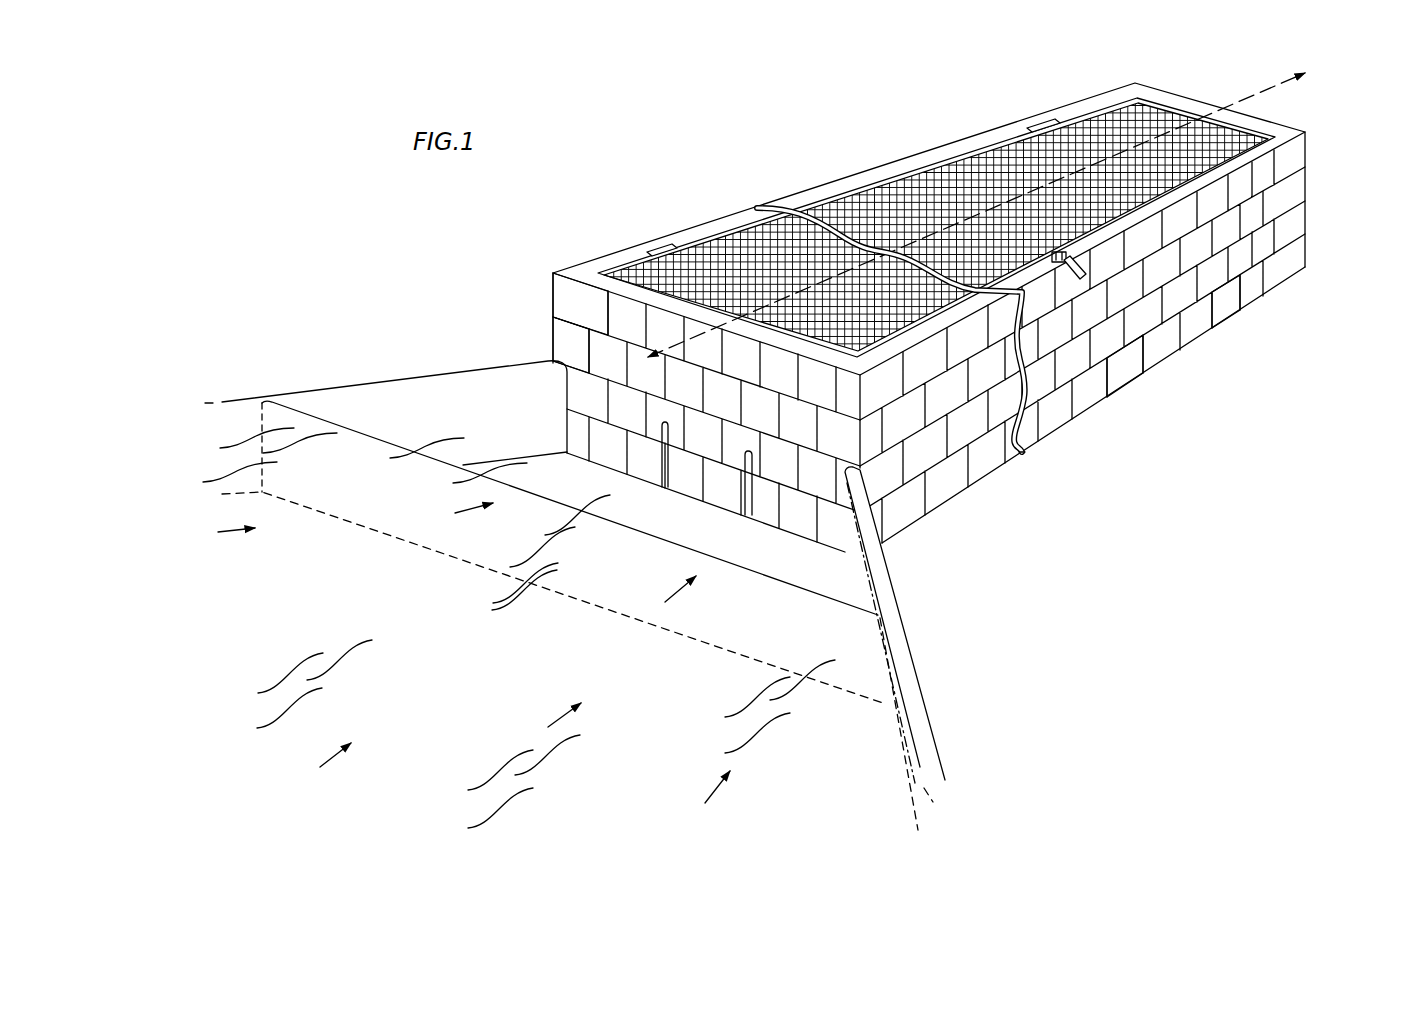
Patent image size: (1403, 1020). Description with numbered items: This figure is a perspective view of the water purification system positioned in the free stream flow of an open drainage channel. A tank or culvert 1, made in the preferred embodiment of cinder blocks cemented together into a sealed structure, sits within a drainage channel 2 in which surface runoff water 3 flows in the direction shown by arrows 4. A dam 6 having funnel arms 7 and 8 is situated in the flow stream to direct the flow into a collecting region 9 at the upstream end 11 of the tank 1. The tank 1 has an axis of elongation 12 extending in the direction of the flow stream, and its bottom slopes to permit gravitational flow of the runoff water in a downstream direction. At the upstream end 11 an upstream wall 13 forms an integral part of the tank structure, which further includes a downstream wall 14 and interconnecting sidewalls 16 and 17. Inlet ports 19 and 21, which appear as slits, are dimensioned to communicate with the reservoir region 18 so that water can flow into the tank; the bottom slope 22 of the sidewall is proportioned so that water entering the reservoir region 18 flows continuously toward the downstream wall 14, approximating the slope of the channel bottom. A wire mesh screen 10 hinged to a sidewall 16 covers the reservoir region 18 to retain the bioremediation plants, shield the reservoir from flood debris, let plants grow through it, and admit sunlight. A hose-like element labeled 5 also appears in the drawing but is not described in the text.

The tank or culvert 1 is at (1297, 193).
The drainage channel 2 is at (847, 768).
The surface runoff water 3 is at (528, 788).
The arrows 4 is at (722, 800).
The hose outlet 5 is at (1027, 452).
The dam 6 is at (883, 588).
The funnel arm 7 is at (910, 765).
The funnel arm 8 is at (428, 400).
The collecting region 9 is at (832, 577).
The wire mesh screen 10 is at (1083, 122).
The upstream end 11 is at (563, 352).
The axis of elongation 12 is at (1257, 90).
The upstream wall 13 is at (587, 297).
The downstream wall 14 is at (1183, 97).
The sidewall 16 is at (830, 177).
The sidewall 17 is at (1133, 377).
The reservoir region 18 is at (960, 187).
The inlet port 19 is at (745, 491).
The inlet port 21 is at (661, 459).
The bottom slope 22 is at (1223, 322).